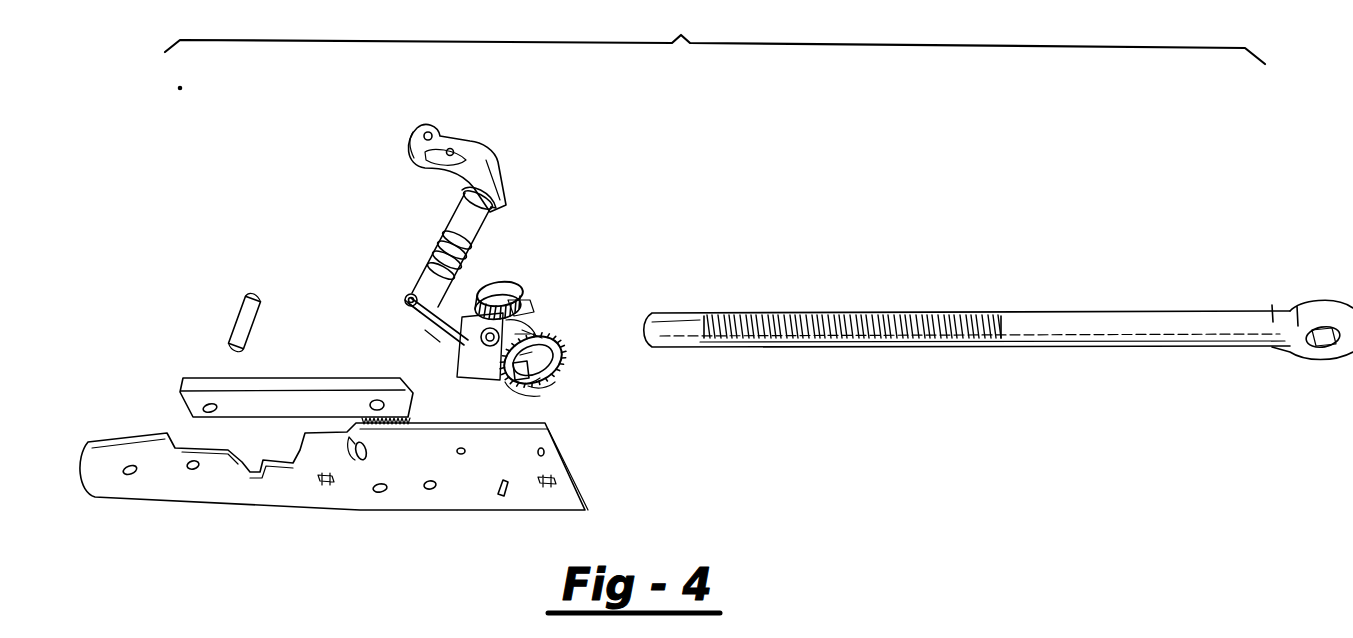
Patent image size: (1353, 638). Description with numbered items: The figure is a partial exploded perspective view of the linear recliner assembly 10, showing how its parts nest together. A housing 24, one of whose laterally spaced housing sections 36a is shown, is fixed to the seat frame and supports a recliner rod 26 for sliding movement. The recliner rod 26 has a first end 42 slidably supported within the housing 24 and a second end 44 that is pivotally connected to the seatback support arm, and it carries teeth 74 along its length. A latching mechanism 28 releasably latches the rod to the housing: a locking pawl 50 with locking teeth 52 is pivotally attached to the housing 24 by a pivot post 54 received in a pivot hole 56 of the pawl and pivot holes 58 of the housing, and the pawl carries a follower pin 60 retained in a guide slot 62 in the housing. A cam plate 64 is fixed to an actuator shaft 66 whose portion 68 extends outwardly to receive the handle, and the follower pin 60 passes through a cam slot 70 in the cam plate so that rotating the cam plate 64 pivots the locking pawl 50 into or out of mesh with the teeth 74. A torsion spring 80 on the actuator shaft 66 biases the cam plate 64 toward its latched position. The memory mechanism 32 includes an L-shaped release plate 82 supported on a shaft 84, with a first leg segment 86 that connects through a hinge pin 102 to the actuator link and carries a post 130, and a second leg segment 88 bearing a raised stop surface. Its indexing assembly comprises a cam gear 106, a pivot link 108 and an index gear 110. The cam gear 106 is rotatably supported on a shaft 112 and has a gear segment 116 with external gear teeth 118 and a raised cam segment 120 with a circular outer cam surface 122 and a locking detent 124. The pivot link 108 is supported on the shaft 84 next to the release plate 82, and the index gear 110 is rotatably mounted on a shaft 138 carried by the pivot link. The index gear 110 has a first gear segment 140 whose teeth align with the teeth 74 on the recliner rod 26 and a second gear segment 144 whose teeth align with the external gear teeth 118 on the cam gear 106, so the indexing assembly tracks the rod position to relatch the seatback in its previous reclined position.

The linear recliner assembly 10 is at (715, 35).
The housing 24 is at (309, 488).
The recliner rod 26 is at (998, 299).
The latching mechanism 28 is at (320, 298).
The memory mechanism 32 is at (581, 250).
The housing section 36a is at (467, 490).
The first end 42 is at (685, 325).
The second end 44 is at (1302, 325).
The locking pawl 50 is at (311, 398).
The locking teeth 52 is at (396, 426).
The pivot post 54 is at (232, 312).
The pivot hole 56 is at (210, 403).
The pivot holes 58 is at (195, 470).
The follower pin 60 is at (370, 405).
The guide slot 62 is at (359, 460).
The cam plate 64 is at (461, 156).
The actuator shaft 66 is at (482, 236).
The portion 68 is at (485, 237).
The cam slot 70 is at (462, 152).
The teeth 74 is at (905, 312).
The torsion spring 80 is at (438, 268).
The release plate 82 is at (405, 301).
The shaft 84 is at (476, 368).
The first leg segment 86 is at (428, 340).
The second leg segment 88 is at (488, 380).
The hinge pin 102 is at (414, 140).
The cam gear 106 is at (548, 338).
The pivot link 108 is at (416, 332).
The index gear 110 is at (545, 302).
The shaft 112 is at (586, 371).
The gear segment 116 is at (558, 386).
The external gear teeth 118 is at (560, 380).
The raised cam segment 120 is at (540, 330).
The outer cam surface 122 is at (558, 362).
The locking detent 124 is at (545, 398).
The post 130 is at (409, 298).
The shaft 138 is at (581, 250).
The first gear segment 140 is at (565, 268).
The second gear segment 144 is at (548, 318).